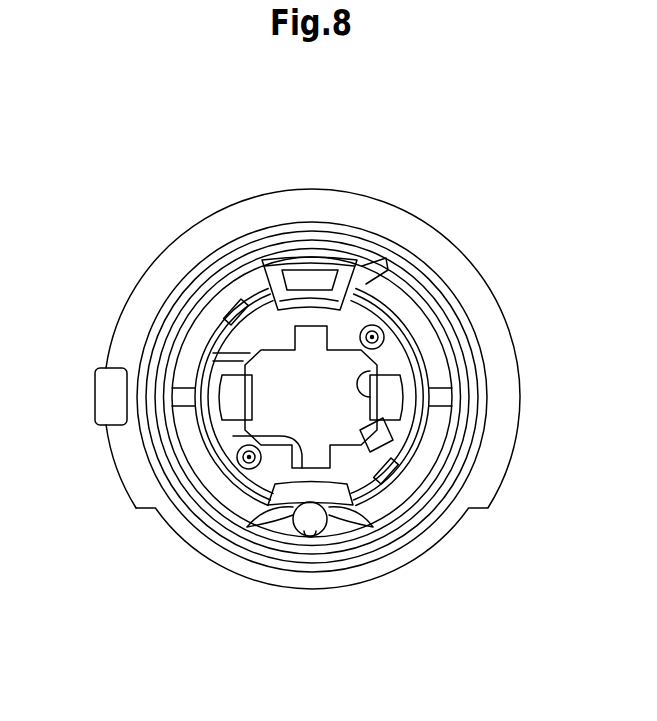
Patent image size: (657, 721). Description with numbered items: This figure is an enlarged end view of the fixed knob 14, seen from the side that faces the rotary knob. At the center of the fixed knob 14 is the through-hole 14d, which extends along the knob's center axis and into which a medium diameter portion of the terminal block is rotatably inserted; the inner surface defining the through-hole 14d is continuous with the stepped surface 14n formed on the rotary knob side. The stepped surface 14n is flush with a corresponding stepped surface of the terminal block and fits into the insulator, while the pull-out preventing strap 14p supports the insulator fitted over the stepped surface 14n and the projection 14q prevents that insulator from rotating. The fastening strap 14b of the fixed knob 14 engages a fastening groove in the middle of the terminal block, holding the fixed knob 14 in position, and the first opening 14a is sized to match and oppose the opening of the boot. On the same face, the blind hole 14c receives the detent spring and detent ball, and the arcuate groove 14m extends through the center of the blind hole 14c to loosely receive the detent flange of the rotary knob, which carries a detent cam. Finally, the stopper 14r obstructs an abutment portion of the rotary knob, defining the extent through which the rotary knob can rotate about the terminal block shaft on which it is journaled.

The fixed knob 14 is at (303, 191).
The first opening 14a is at (157, 327).
The fastening strap 14b is at (252, 395).
The blind hole 14c is at (311, 537).
The through-hole 14d is at (235, 440).
The arcuate groove 14m is at (268, 523).
The stepped surface 14n is at (283, 330).
The pull-out preventing strap 14p is at (243, 313).
The projection 14q is at (378, 334).
The stopper 14r is at (380, 262).